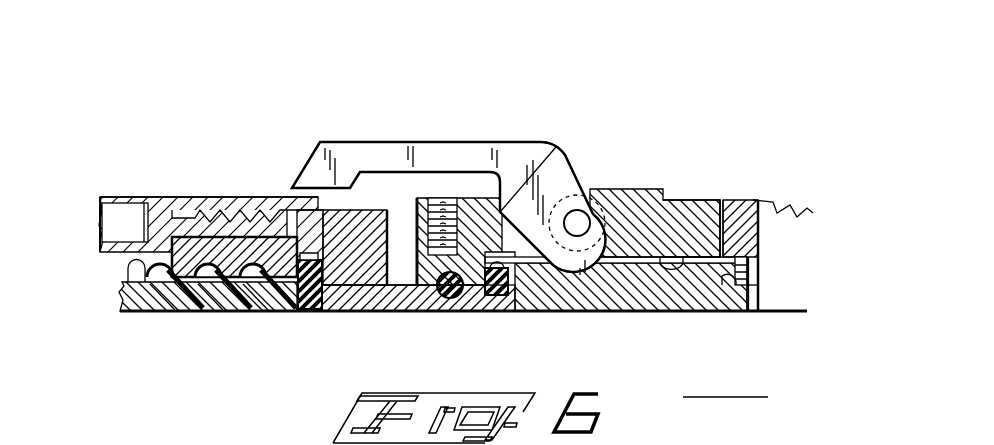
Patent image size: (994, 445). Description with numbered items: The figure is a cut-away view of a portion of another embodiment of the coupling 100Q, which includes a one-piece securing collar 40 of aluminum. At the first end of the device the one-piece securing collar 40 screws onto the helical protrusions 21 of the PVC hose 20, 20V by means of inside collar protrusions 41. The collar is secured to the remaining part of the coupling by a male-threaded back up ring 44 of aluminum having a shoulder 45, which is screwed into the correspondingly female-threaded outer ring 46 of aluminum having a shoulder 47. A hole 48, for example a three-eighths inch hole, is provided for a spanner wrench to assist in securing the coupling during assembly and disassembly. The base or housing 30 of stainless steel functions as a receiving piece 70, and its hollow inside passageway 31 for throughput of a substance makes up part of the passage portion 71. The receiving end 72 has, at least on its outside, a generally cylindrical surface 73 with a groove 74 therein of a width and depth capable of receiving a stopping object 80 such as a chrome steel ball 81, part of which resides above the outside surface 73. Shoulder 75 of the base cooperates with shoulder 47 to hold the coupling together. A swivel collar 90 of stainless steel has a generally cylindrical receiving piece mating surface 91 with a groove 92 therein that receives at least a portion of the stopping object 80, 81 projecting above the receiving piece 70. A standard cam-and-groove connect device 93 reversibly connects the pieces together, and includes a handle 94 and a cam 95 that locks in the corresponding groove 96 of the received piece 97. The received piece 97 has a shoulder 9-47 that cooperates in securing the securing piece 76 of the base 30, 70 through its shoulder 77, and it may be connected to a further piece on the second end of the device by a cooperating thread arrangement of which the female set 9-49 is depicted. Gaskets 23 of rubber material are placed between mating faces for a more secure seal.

The coupling 100Q is at (238, 118).
The hole 48 is at (123, 222).
The male-threaded back up ring 44 is at (158, 196).
The one-piece securing collar 40 is at (223, 237).
The female-threaded outer ring 46 is at (290, 188).
The shoulder 47 is at (348, 212).
The connect device 93 is at (402, 285).
The receiving end 72 is at (392, 182).
The generally cylindrical surface 73 is at (500, 92).
The handle 94 is at (533, 143).
The cam 95 is at (512, 176).
The groove 96 is at (640, 189).
The swivel collar 90 is at (650, 189).
The receiving piece mating surface 91 is at (678, 202).
The received piece 97 is at (740, 200).
The female set 9-49 is at (783, 214).
The shoulder 77 is at (753, 295).
The shoulder 9-47 is at (752, 267).
The helical protrusions 21 is at (128, 266).
The hose 20 is at (167, 312).
The PVC hose 20V is at (208, 349).
The shoulder 45 is at (197, 313).
The inside collar protrusions 41 is at (272, 313).
The gaskets 23 is at (310, 312).
The shoulder 75 is at (362, 312).
The base or housing 30 is at (362, 287).
The receiving piece 70 is at (462, 335).
The groove 92 is at (446, 266).
The groove 74 is at (455, 272).
The stopping object 80 is at (492, 296).
The chrome steel ball 81 is at (620, 337).
The securing piece 76 is at (682, 312).
The hollow inside passageway 31 is at (683, 397).
The passage portion 71 is at (825, 380).